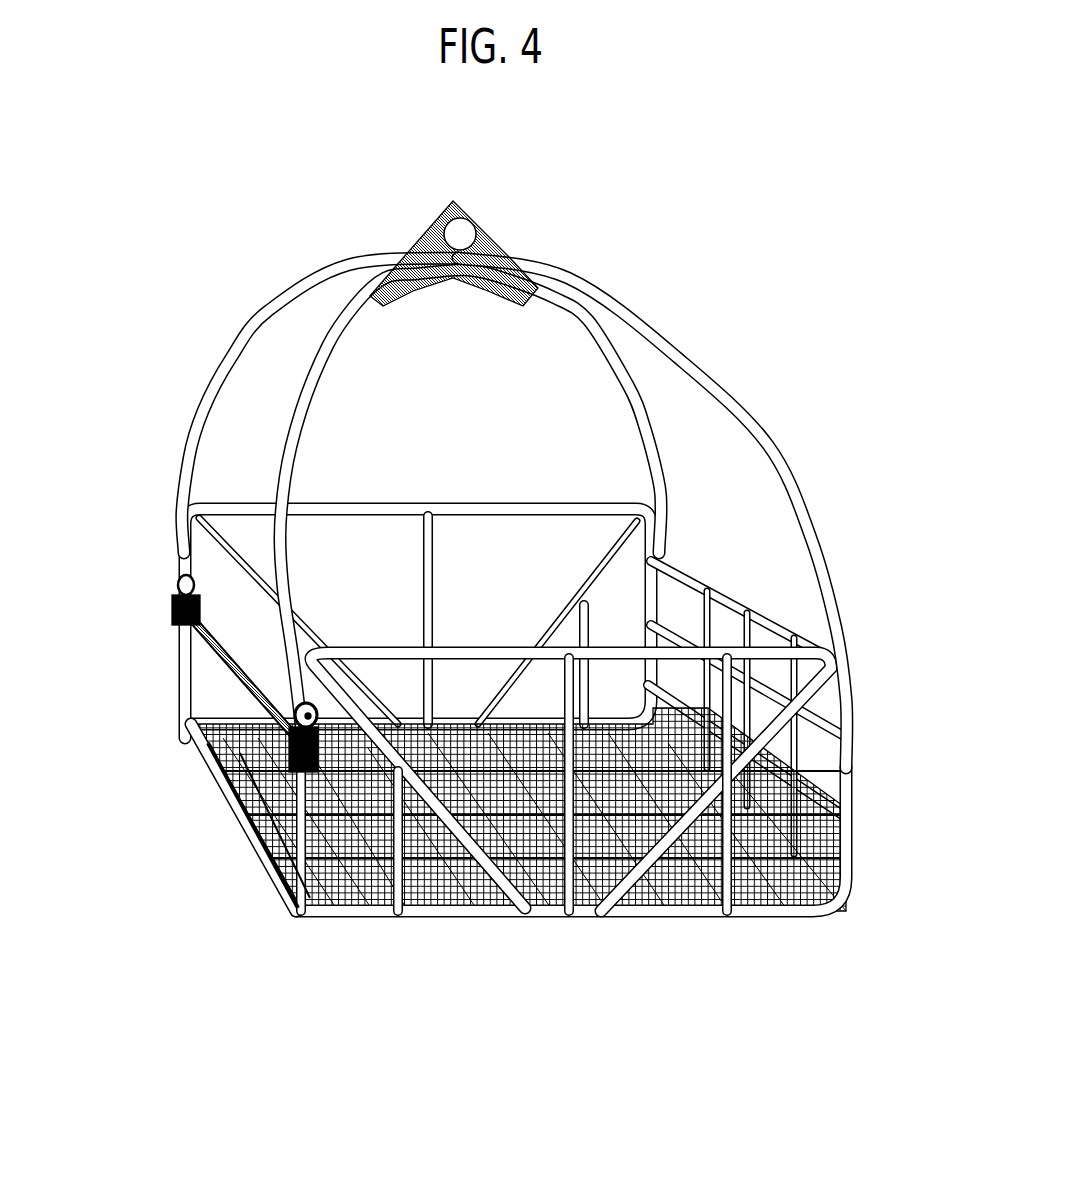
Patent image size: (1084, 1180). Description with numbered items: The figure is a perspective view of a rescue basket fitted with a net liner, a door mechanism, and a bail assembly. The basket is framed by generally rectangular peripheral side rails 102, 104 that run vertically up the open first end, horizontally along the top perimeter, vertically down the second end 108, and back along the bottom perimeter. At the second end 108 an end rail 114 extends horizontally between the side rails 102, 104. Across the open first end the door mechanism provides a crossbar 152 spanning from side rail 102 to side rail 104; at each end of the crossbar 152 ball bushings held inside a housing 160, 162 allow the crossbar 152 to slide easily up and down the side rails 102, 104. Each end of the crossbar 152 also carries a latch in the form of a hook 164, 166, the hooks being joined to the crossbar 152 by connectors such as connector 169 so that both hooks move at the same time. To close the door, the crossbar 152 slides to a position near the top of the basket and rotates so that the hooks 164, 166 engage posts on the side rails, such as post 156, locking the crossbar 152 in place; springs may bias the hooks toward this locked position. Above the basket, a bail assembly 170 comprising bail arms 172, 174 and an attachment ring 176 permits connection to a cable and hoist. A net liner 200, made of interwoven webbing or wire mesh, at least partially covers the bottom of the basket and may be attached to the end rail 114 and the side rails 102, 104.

The side rail 102 is at (583, 503).
The side rail 104 is at (763, 627).
The second end 108 is at (838, 912).
The end rail 114 is at (840, 836).
The crossbar 152 is at (220, 662).
The post 156 is at (278, 727).
The housing 160 is at (168, 617).
The housing 162 is at (247, 808).
The hook 164 is at (168, 578).
The hook 166 is at (240, 760).
The connector 169 is at (265, 775).
The bail assembly 170 is at (465, 490).
The bail arm 172 is at (685, 345).
The bail arm 174 is at (190, 398).
The attachment ring 176 is at (455, 224).
The net liner 200 is at (393, 907).